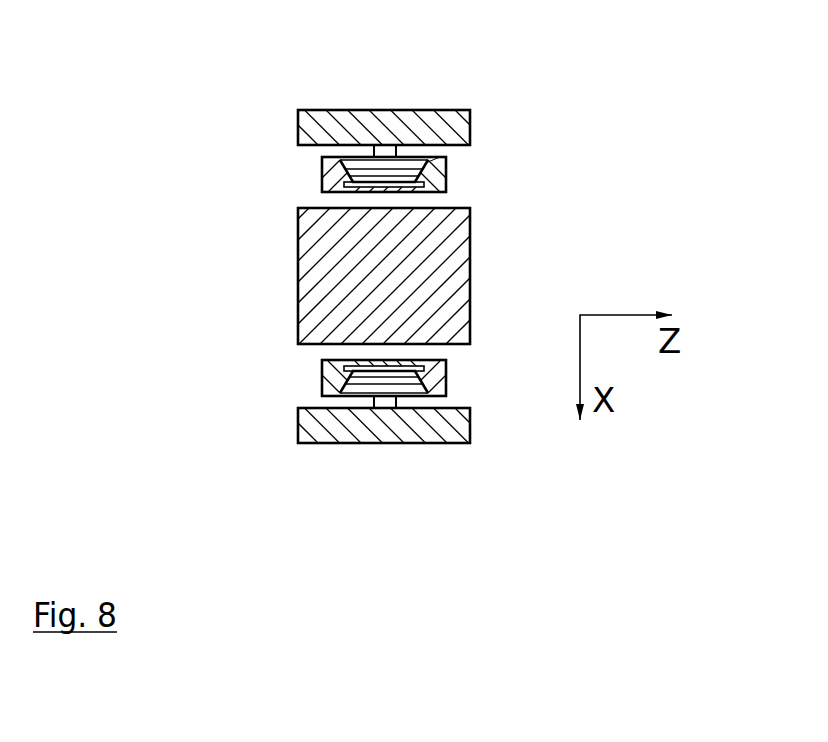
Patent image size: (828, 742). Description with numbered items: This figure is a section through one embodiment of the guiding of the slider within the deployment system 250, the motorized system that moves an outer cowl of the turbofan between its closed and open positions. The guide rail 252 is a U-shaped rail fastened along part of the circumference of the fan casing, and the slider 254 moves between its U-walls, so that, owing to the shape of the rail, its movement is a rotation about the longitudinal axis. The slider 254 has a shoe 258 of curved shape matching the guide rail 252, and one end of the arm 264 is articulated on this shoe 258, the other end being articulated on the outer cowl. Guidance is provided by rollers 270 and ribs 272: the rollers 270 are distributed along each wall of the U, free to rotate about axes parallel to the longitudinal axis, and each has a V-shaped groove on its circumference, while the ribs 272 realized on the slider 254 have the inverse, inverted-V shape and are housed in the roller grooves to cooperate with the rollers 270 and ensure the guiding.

The deployment system 250 is at (603, 120).
The guide rail 252 is at (470, 117).
The slider 254 is at (336, 160).
The shoe 258 is at (336, 182).
The arm 264 is at (315, 249).
The rollers 270 is at (367, 380).
The ribs 272 is at (440, 155).